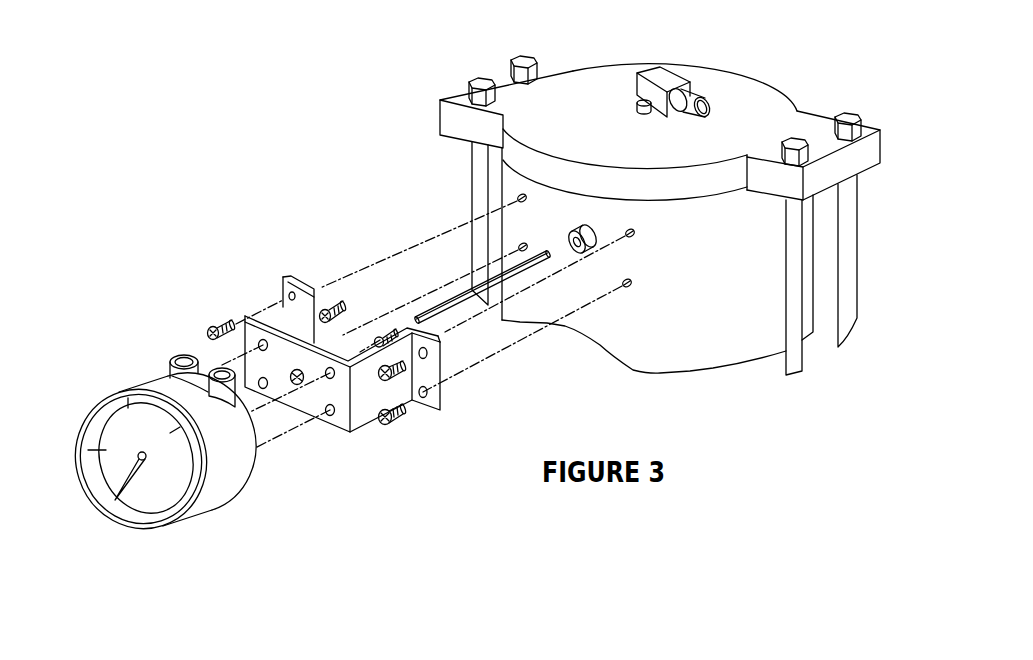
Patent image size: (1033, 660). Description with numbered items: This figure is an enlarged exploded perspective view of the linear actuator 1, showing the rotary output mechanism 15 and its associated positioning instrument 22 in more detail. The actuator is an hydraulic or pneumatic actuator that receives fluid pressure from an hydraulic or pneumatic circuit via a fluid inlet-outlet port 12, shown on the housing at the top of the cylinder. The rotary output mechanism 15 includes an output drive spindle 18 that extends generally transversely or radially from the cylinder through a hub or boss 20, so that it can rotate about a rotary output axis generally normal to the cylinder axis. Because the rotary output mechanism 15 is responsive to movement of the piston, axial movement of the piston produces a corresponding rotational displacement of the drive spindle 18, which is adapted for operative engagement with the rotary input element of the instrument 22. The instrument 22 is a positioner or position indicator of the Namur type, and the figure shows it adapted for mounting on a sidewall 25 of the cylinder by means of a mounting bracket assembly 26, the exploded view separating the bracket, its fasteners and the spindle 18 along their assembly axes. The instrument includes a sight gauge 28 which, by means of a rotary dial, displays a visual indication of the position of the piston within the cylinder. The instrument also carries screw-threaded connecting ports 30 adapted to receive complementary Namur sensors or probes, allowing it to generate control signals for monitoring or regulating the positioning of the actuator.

The linear actuator 1 is at (340, 158).
The fluid inlet-outlet port 12 is at (716, 82).
The rotary output mechanism 15 is at (422, 268).
The output drive spindle 18 is at (453, 317).
The hub or boss 20 is at (588, 233).
The instrument 22 is at (103, 392).
The sidewall 25 is at (693, 347).
The mounting bracket assembly 26 is at (345, 408).
The sight gauge 28 is at (158, 472).
The screw-threaded connecting ports 30 is at (186, 356).